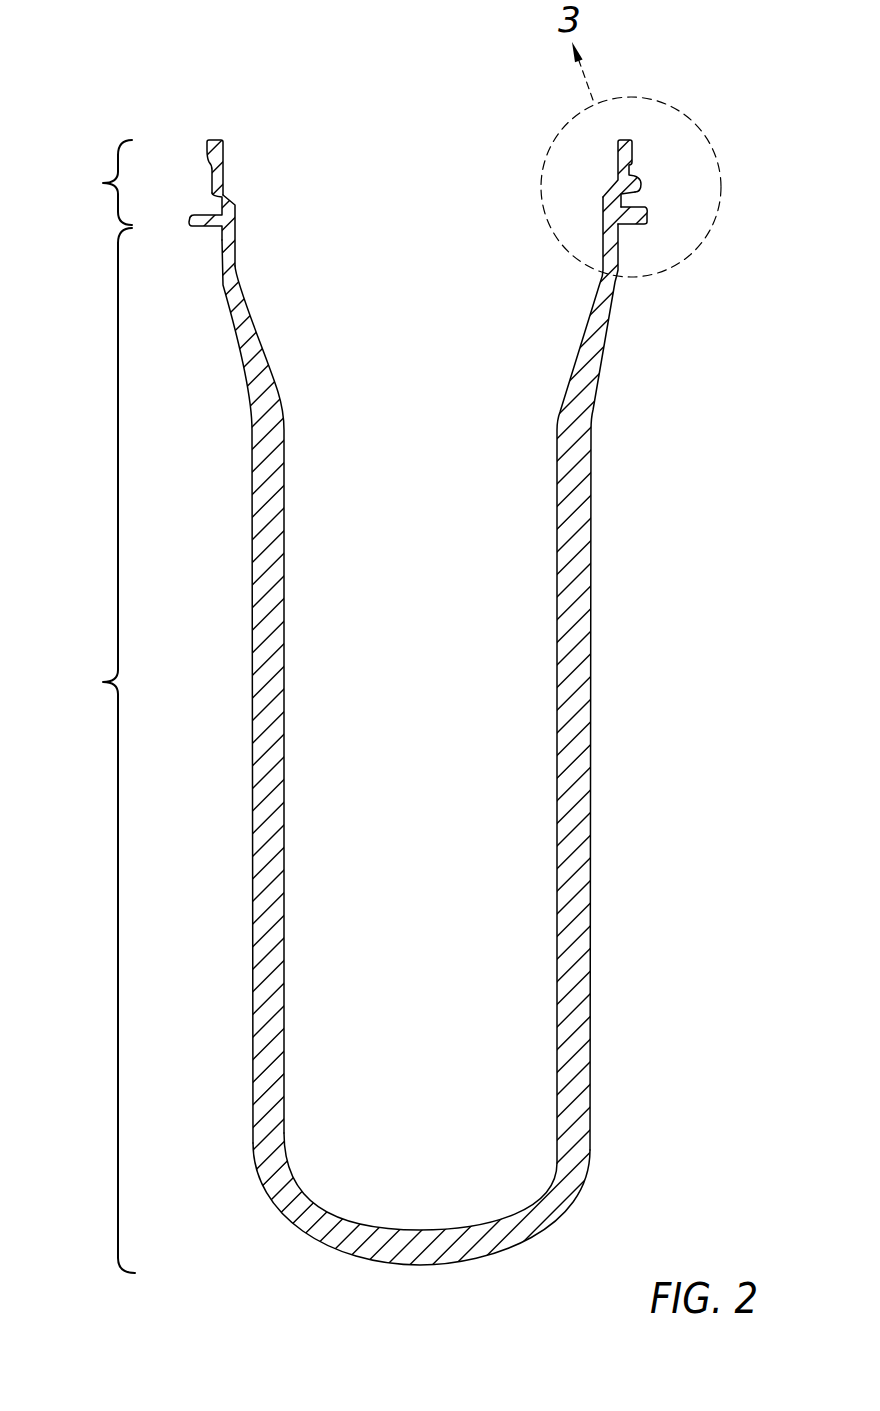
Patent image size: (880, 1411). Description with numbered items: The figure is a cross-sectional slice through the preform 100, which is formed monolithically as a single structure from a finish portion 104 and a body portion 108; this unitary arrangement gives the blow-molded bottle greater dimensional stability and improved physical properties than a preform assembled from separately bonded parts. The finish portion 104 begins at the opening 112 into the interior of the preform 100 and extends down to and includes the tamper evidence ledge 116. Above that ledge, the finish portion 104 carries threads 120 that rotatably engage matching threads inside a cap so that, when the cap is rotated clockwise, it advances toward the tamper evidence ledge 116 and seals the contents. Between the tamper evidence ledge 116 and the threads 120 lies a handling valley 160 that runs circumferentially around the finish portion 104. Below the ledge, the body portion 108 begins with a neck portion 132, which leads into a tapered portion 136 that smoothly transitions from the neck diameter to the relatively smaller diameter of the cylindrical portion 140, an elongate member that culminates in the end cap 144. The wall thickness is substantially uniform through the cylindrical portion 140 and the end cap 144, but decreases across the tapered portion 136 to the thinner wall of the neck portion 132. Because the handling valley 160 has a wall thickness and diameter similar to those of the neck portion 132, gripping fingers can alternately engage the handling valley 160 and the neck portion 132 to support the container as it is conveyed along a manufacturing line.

The preform 100 is at (662, 1015).
The finish portion 104 is at (98, 182).
The body portion 108 is at (98, 750).
The opening 112 is at (362, 126).
The tamper evidence ledge 116 is at (647, 224).
The threads 120 is at (198, 168).
The neck portion 132 is at (222, 242).
The tapered portion 136 is at (601, 357).
The cylindrical portion 140 is at (252, 792).
The end cap 144 is at (368, 1260).
The handling valley 160 is at (622, 204).